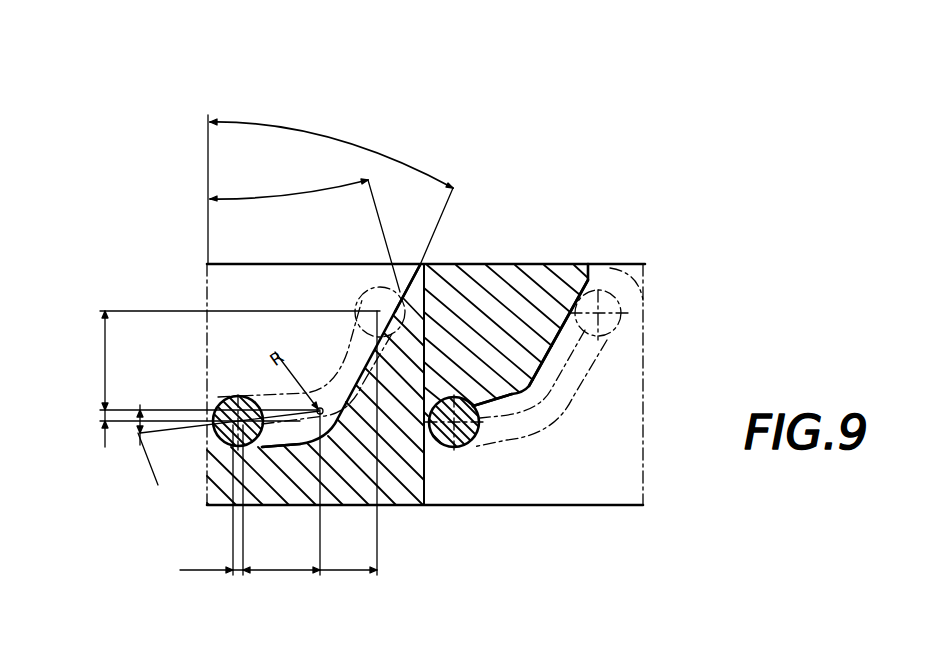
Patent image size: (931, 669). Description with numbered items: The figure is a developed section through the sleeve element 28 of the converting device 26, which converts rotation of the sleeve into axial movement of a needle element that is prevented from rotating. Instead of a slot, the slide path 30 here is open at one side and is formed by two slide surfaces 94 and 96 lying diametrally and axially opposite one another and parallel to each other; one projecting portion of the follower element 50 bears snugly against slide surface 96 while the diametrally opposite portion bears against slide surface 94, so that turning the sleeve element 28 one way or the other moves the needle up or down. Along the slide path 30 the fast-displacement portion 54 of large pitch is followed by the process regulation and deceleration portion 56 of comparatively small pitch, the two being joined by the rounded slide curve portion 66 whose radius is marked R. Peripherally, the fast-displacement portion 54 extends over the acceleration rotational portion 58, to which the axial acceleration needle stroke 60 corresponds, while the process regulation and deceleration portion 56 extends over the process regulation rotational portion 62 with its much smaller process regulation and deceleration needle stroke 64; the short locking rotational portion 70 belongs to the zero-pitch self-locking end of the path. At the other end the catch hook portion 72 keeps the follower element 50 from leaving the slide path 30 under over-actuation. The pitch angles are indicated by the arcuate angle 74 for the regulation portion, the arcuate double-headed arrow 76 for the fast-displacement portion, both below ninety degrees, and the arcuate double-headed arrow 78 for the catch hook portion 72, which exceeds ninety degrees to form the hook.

The converting device 26 is at (607, 97).
The sleeve element 28 is at (503, 297).
The slide path 30 is at (355, 388).
The follower element 50 is at (213, 449).
The fast-displacement portion 54 is at (344, 349).
The process regulation and deceleration portion 56 is at (283, 433).
The acceleration rotational portion 58 is at (346, 572).
The acceleration needle stroke 60 is at (105, 360).
The process regulation rotational portion 62 is at (282, 572).
The process regulation and deceleration needle stroke 64 is at (103, 412).
The rounded slide curve portion 66 is at (529, 396).
The locking rotational portion 70 is at (235, 572).
The catch hook portion 72 is at (409, 283).
The arcuate angle 74 is at (136, 433).
The arcuate double-headed arrow 76 is at (334, 140).
The arcuate double-headed arrow 78 is at (279, 198).
The slide surface 94 is at (557, 367).
The slide surface 96 is at (360, 288).